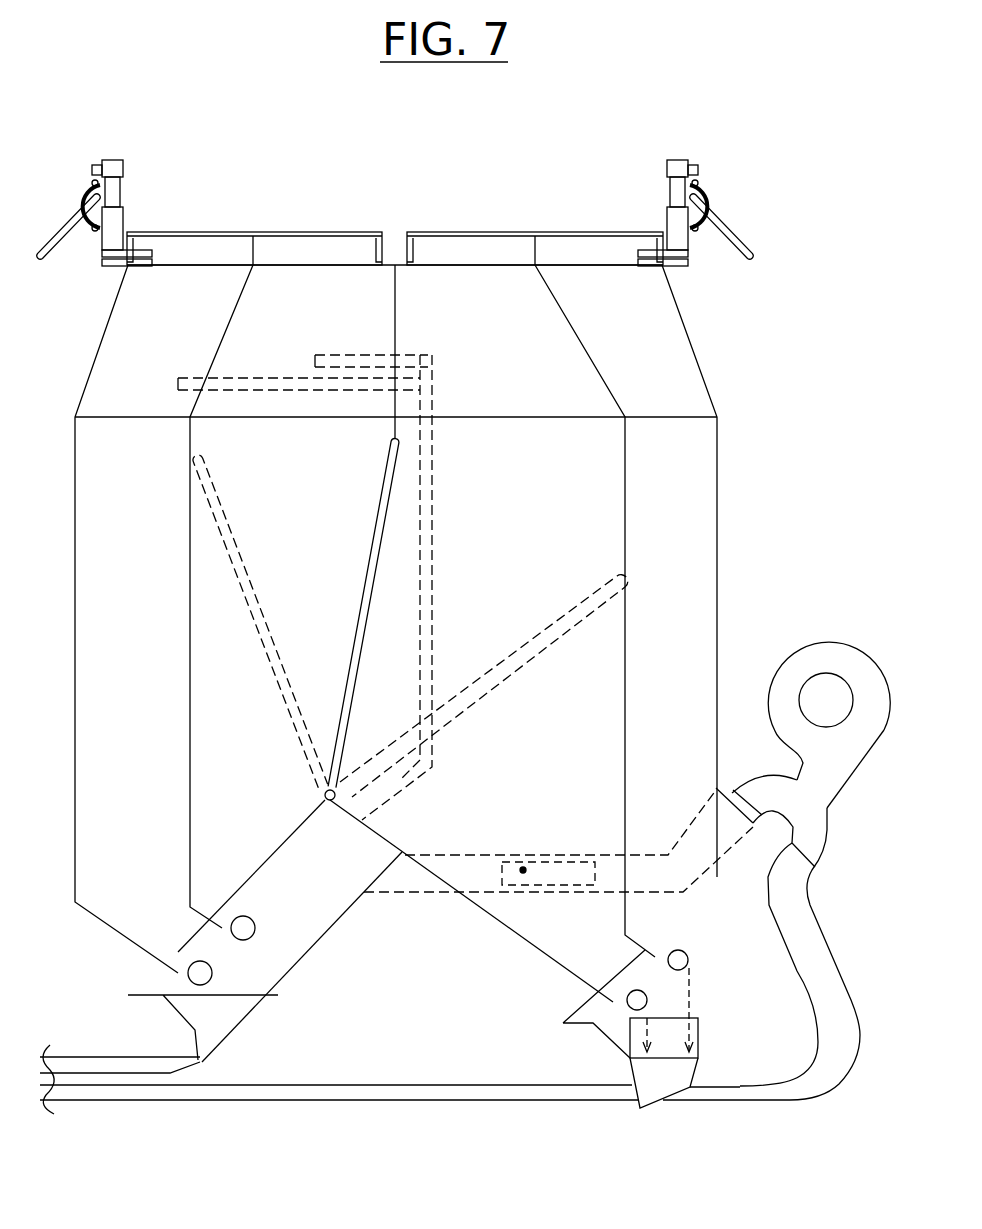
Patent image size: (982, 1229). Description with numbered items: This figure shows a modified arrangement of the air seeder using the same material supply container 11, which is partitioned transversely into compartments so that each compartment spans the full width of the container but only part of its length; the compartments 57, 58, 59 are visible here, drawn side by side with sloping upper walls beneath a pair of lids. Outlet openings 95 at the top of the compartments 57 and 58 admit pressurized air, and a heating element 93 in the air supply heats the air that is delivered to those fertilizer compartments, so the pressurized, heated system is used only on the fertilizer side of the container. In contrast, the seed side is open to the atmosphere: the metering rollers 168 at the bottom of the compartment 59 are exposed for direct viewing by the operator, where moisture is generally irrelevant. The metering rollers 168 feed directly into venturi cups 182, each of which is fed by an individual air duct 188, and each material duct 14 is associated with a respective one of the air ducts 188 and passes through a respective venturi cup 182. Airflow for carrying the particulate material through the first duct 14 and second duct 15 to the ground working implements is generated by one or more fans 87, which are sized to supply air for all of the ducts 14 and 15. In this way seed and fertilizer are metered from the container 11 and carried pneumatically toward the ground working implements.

The material supply container 11 is at (75, 710).
The first duct 14 is at (358, 1086).
The second duct 15 is at (130, 1057).
The compartment 57 is at (151, 808).
The compartment 58 is at (251, 748).
The compartment 59 is at (541, 782).
The fan 87 is at (847, 641).
The heating element 93 is at (523, 868).
The outlet opening 95 is at (313, 360).
The metering roller 168 is at (688, 952).
The venturi cup 182 is at (647, 1105).
The air duct 188 is at (807, 892).